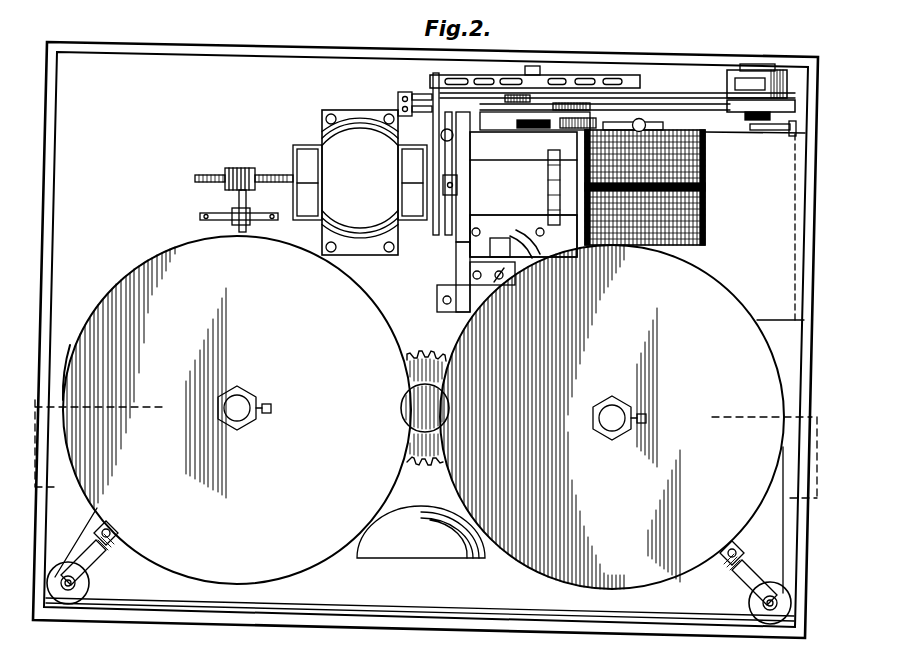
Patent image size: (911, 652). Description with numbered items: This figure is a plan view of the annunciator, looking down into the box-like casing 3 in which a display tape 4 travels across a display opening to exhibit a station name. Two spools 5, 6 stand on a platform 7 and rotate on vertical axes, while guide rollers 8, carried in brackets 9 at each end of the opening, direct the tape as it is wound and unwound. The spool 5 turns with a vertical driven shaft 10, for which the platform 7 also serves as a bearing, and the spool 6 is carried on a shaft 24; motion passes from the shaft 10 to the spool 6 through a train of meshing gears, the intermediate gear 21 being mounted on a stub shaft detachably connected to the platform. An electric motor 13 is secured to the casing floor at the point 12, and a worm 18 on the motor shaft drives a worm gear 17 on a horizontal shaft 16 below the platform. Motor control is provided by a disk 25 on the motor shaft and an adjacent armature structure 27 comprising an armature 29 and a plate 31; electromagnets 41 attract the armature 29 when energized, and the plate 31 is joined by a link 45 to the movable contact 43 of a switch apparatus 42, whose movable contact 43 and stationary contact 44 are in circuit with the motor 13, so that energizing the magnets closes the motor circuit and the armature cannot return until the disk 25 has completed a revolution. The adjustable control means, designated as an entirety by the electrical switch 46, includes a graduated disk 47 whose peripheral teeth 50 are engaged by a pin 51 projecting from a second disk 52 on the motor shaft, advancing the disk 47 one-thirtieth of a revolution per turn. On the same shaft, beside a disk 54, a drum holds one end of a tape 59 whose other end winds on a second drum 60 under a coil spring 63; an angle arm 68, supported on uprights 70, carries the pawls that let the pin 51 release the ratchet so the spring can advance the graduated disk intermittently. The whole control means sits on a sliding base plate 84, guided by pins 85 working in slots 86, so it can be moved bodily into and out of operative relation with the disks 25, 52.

The casing 3 is at (333, 632).
The display tape 4 is at (479, 606).
The spool 5 is at (139, 261).
The spool 6 is at (746, 298).
The platform 7 is at (78, 300).
The guide rollers 8 is at (90, 588).
The brackets 9 is at (97, 560).
The driven shaft 10 is at (240, 406).
The motor securing point 12 is at (331, 114).
The electric motor 13 is at (330, 152).
The shaft 16 is at (226, 216).
The worm gear 17 is at (220, 175).
The worm 18 is at (241, 168).
The gear 21 is at (427, 441).
The shaft 24 is at (611, 420).
The disk 25 is at (455, 152).
The armature structure 27 is at (509, 170).
The armature 29 is at (566, 187).
The plate 31 is at (385, 255).
The electro-magnets 41 is at (683, 208).
The switch apparatus 42 is at (503, 220).
The movable contact 43 is at (513, 246).
The stationary contact 44 is at (533, 249).
The link 45 is at (472, 213).
The electrical switch 46 is at (392, 95).
The graduated disk 47 is at (577, 71).
The teeth 50 is at (598, 106).
The pin 51 is at (429, 85).
The disk 52 is at (436, 203).
The disk 54 is at (520, 112).
The tape 59 is at (670, 97).
The second drum 60 is at (787, 93).
The coil spring 63 is at (737, 80).
The angle arm 68 is at (643, 107).
The uprights 70 is at (600, 90).
The base plate 84 is at (728, 123).
The pins 85 is at (792, 133).
The slots 86 is at (768, 125).